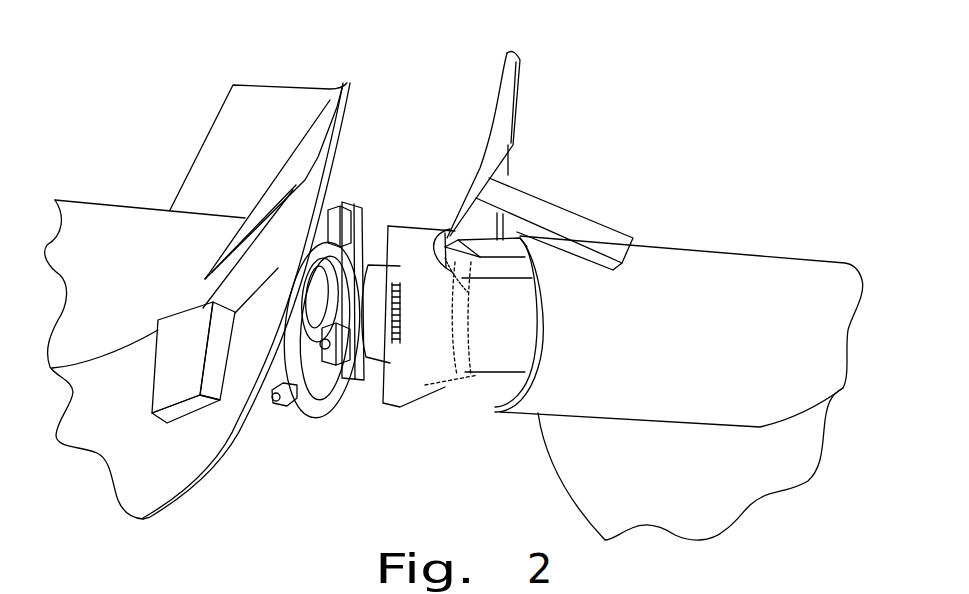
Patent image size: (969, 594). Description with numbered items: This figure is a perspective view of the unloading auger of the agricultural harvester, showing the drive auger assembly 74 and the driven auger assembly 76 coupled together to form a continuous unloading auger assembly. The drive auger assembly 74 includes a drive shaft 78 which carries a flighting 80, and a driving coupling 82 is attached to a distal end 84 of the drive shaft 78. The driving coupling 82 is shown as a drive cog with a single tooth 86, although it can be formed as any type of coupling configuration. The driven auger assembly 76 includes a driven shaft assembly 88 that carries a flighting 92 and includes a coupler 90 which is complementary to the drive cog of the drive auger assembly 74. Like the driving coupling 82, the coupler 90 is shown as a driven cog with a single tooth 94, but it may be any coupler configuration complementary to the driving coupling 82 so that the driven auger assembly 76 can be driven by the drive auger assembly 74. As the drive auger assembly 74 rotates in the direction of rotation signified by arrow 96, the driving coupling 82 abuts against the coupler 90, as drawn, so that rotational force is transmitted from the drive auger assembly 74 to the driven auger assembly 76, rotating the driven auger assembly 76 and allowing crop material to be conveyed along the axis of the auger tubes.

The drive auger assembly 74 is at (140, 157).
The driven auger assembly 76 is at (436, 102).
The drive shaft 78 is at (138, 227).
The flighting 80 is at (293, 97).
The driving coupling 82 is at (387, 218).
The distal end 84 is at (305, 412).
The single tooth 86 is at (445, 232).
The driven shaft assembly 88 is at (733, 257).
The coupler 90 is at (510, 336).
The flighting 92 is at (507, 84).
The single tooth 94 is at (520, 238).
The arrow 96 is at (454, 338).